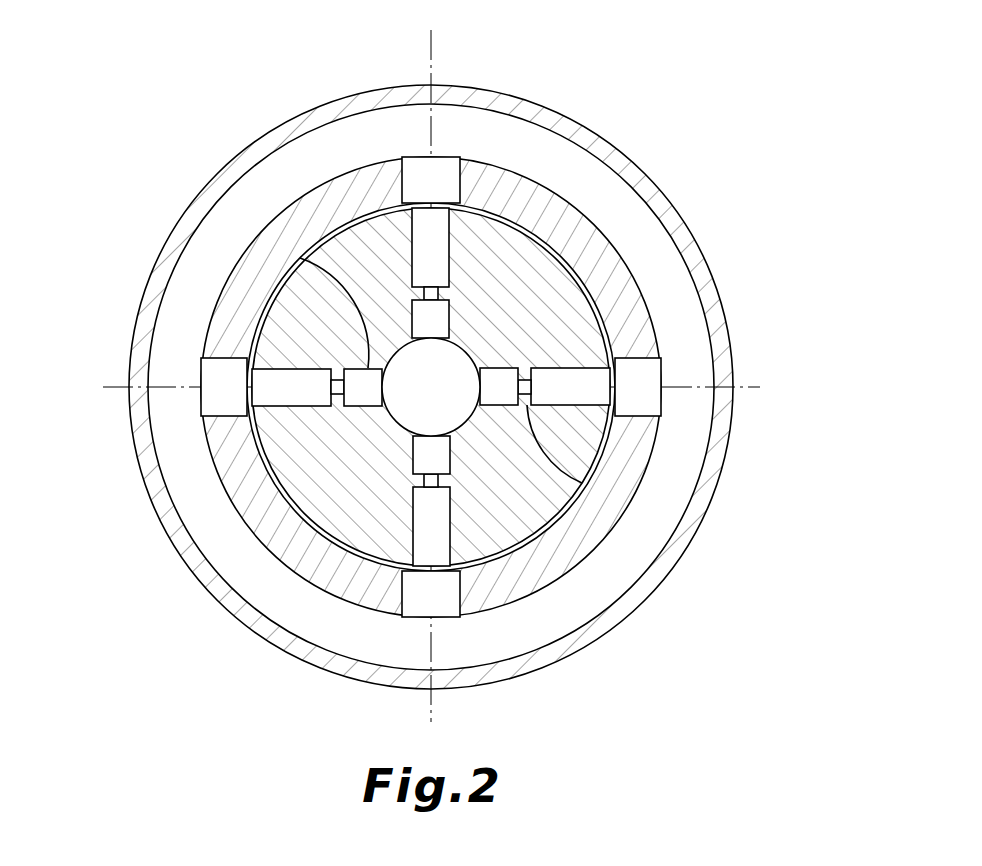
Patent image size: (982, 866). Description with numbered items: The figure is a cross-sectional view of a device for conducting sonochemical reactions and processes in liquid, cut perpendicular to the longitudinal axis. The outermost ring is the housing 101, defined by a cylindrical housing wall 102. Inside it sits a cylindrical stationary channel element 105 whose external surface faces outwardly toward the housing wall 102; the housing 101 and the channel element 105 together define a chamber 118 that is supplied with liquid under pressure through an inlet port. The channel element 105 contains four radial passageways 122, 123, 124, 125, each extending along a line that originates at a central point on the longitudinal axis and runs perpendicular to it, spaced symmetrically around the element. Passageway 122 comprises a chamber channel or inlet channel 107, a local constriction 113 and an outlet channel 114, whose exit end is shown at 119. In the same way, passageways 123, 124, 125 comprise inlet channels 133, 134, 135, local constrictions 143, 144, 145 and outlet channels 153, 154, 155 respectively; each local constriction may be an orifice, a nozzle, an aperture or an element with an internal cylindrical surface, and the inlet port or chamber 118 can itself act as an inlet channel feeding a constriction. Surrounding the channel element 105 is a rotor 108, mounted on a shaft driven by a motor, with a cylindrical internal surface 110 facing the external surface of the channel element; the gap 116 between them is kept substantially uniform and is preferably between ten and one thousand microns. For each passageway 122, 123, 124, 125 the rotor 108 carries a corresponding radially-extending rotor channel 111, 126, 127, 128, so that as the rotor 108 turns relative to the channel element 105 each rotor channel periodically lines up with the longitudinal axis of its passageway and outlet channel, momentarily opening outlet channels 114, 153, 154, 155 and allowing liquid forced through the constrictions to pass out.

The housing 101 is at (620, 612).
The cylindrical housing wall 102 is at (431, 387).
The stationary channel element 105 is at (528, 399).
The inlet channel 107 is at (500, 368).
The rotor 108 is at (528, 396).
The cylindrical internal surface 110 is at (358, 207).
The rotor channel 111 is at (710, 402).
The local constriction 113 is at (449, 323).
The outlet channel 114 is at (403, 199).
The gap 116 is at (266, 552).
The chamber 118 is at (417, 402).
The exit end 119 is at (449, 292).
The passageway 122 is at (412, 262).
The passageway 123 is at (590, 318).
The passageway 124 is at (412, 512).
The passageway 125 is at (302, 368).
The rotor channel 126 is at (413, 600).
The rotor channel 127 is at (218, 404).
The rotor channel 128 is at (443, 175).
The inlet channel 133 is at (563, 368).
The inlet channel 134 is at (412, 453).
The inlet channel 135 is at (337, 426).
The local constriction 143 is at (582, 483).
The local constriction 144 is at (423, 480).
The local constriction 145 is at (338, 368).
The outlet channel 153 is at (617, 341).
The outlet channel 154 is at (257, 591).
The outlet channel 155 is at (184, 332).